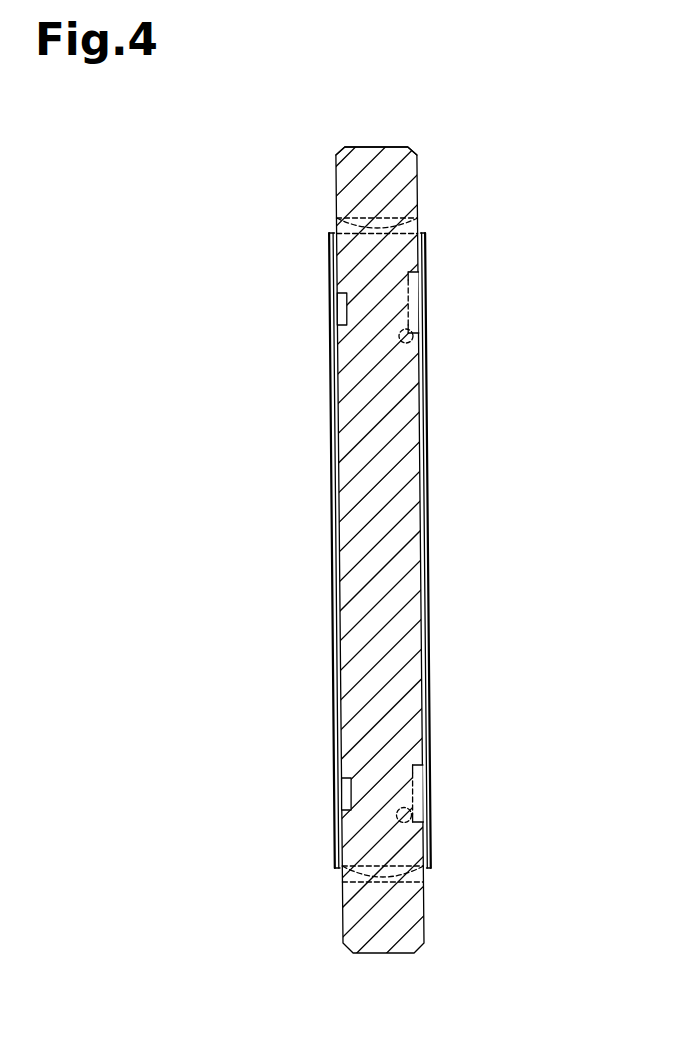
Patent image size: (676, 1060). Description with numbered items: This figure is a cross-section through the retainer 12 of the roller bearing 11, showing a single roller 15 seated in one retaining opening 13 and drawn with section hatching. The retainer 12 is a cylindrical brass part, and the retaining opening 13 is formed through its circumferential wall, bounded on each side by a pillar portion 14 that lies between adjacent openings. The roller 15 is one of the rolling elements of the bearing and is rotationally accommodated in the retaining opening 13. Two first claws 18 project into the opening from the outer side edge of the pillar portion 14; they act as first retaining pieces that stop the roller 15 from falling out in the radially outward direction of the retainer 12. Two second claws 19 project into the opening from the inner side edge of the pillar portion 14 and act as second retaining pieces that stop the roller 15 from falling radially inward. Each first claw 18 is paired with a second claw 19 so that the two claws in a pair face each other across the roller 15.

The roller bearing 11 is at (348, 141).
The retainer 12 is at (428, 120).
The retaining opening 13 is at (418, 223).
The pillar portion 14 is at (413, 430).
The roller 15 is at (330, 430).
The first claw 18 is at (338, 309).
The second claw 19 is at (421, 340).